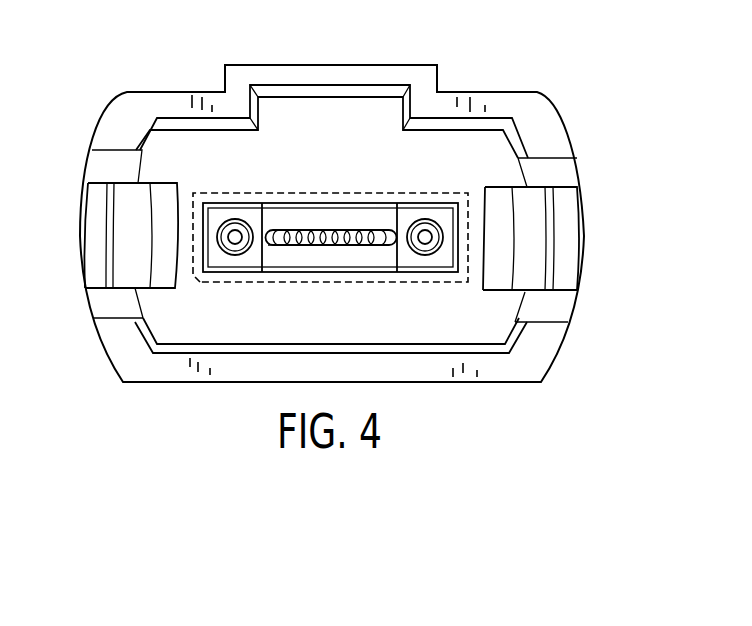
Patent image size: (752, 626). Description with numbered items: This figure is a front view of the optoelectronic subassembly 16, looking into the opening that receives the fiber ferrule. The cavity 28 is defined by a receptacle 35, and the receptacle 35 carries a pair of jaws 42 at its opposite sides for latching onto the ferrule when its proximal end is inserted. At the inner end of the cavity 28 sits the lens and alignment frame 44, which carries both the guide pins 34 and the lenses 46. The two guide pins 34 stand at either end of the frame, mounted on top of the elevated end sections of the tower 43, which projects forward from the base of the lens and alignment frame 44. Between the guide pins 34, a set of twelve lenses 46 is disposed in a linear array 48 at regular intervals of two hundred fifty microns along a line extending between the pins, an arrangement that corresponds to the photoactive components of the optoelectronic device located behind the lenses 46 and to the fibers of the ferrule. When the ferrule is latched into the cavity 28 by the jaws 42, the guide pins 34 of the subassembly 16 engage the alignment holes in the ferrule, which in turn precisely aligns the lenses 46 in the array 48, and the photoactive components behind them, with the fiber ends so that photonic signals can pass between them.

The subassembly 16 is at (172, 383).
The cavity 28 is at (493, 312).
The guide pins 34 is at (224, 222).
The receptacle 35 is at (498, 93).
The jaws 42 is at (81, 233).
The tower 43 is at (323, 283).
The lens and alignment frame 44 is at (288, 199).
The lenses 46 is at (297, 246).
The linear array 48 is at (357, 229).